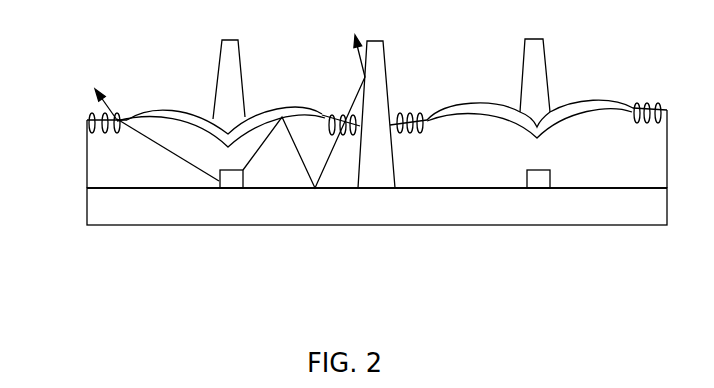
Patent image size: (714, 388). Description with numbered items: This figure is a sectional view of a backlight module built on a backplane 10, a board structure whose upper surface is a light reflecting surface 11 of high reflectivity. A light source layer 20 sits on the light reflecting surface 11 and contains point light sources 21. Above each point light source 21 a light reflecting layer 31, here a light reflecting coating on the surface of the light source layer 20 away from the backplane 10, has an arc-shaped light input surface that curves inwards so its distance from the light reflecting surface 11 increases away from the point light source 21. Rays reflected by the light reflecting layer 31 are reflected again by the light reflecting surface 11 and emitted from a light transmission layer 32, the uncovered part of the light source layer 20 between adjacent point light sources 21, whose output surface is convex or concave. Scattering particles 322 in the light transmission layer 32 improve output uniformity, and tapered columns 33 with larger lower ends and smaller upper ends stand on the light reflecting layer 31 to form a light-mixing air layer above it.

The backplane 10 is at (288, 202).
The light reflecting surface 11 is at (183, 190).
The light source layer 20 is at (578, 170).
The point light source 21 is at (535, 178).
The light reflecting layer 31 is at (472, 105).
The light transmission layer 32 is at (100, 158).
The scattering particles 322 is at (123, 95).
The column 33 is at (232, 60).